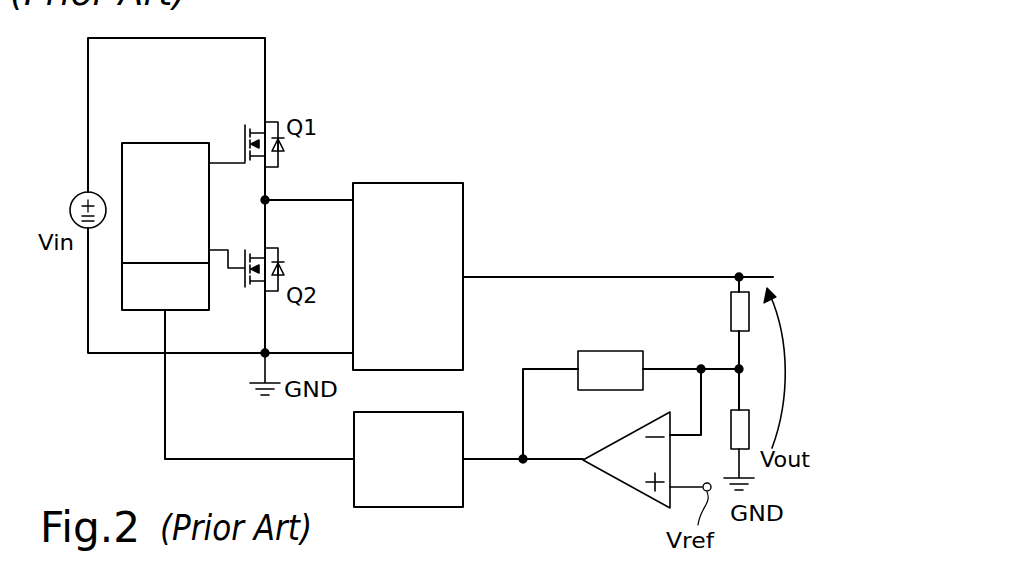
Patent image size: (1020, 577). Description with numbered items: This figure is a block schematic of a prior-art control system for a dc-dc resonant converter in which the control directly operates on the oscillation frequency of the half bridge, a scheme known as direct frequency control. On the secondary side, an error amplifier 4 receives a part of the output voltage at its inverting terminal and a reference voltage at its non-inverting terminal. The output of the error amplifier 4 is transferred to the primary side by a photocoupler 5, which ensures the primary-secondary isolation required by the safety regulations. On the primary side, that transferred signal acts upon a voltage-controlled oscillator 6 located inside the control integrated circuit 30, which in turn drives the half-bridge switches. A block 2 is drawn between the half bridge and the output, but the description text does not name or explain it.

The control integrated circuit 30 is at (167, 143).
The voltage-controlled oscillator (VCO) 6 is at (176, 311).
The transformer/rectifier block 2 is at (408, 276).
The photocoupler 5 is at (390, 508).
The error amplifier 4 is at (637, 477).